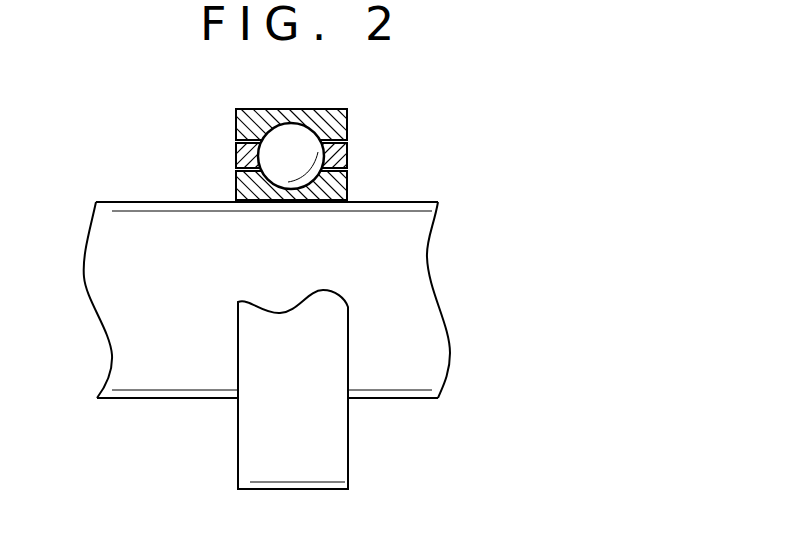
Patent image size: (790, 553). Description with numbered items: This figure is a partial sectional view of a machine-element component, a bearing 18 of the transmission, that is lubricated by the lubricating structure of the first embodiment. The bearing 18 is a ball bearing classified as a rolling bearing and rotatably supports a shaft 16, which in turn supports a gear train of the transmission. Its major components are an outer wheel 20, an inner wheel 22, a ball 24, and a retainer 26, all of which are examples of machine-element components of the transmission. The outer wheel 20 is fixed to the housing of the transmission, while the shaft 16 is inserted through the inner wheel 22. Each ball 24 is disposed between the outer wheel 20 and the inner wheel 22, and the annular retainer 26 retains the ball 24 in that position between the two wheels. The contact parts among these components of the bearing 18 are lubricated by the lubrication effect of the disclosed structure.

The shaft 16 is at (430, 202).
The bearing 18 is at (338, 139).
The outer wheel 20 is at (348, 128).
The inner wheel 22 is at (348, 197).
The ball 24 is at (287, 138).
The retainer 26 is at (348, 158).